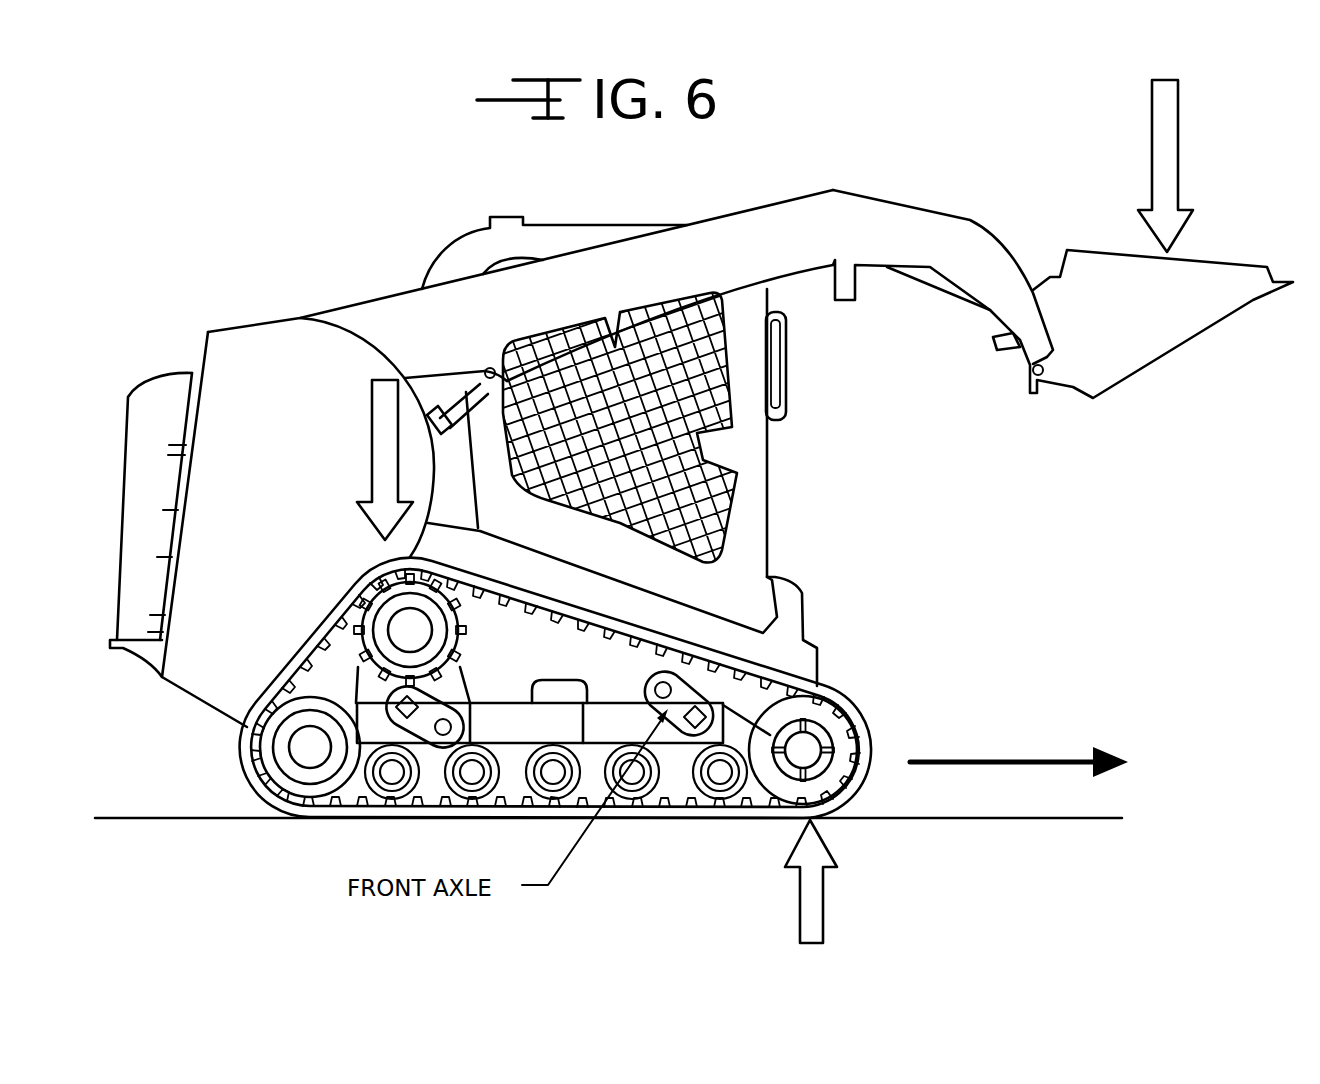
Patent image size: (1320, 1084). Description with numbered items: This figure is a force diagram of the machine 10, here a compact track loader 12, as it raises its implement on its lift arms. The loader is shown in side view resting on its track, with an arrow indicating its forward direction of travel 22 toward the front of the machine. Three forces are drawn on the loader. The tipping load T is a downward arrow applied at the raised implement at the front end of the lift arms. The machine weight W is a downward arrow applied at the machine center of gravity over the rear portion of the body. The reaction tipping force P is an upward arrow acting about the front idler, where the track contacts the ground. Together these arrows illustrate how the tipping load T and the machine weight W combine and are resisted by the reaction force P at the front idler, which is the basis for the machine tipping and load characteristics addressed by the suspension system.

The machine 10 is at (701, 465).
The compact track loader 12 is at (362, 258).
The forward direction of travel 22 is at (987, 757).
The machine weight W is at (372, 413).
The tipping load T is at (1178, 125).
The reaction tipping force P is at (823, 907).